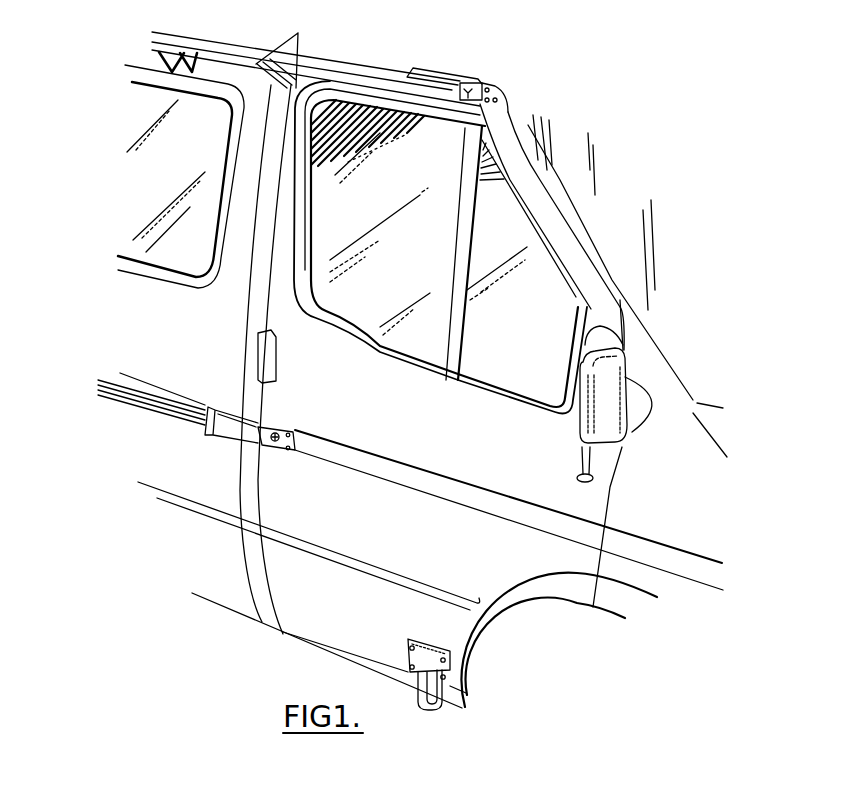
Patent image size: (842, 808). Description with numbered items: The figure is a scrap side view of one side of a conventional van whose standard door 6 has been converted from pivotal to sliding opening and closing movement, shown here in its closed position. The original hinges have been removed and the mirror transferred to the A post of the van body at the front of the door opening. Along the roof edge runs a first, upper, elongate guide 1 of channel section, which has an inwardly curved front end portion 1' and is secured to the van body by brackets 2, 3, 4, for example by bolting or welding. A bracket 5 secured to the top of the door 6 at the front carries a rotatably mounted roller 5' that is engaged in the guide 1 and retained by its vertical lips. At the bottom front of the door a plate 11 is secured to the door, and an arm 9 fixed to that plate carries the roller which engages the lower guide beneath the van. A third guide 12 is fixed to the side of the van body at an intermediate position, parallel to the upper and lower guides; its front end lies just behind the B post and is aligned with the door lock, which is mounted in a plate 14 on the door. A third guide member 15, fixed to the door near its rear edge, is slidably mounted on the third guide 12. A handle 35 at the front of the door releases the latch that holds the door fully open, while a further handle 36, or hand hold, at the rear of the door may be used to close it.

The first upper elongate guide 1 is at (316, 58).
The inwardly curved front end portion 1' is at (484, 50).
The bracket 2 is at (430, 67).
The bracket 3 is at (298, 42).
The bracket 4 is at (200, 63).
The bracket 5 is at (566, 209).
The roller 5' is at (507, 72).
The door 6 is at (427, 442).
The arm 9 is at (428, 672).
The plate 11 is at (409, 655).
The third guide 12 is at (103, 378).
The plate 14 is at (272, 426).
The third guide member 15 is at (212, 407).
The handle 35 is at (581, 466).
The further handle 36 is at (277, 363).